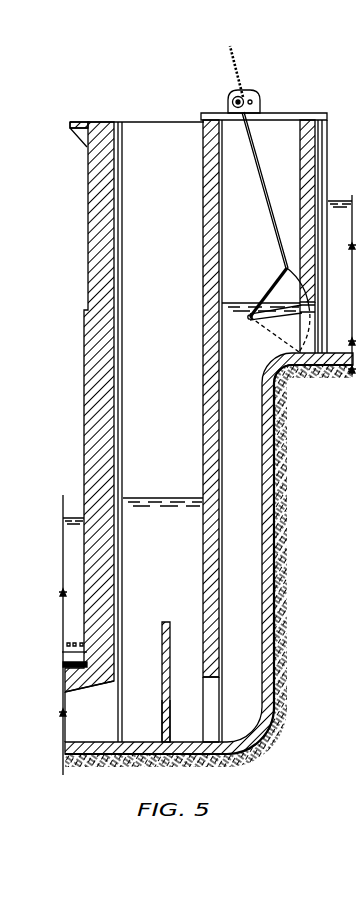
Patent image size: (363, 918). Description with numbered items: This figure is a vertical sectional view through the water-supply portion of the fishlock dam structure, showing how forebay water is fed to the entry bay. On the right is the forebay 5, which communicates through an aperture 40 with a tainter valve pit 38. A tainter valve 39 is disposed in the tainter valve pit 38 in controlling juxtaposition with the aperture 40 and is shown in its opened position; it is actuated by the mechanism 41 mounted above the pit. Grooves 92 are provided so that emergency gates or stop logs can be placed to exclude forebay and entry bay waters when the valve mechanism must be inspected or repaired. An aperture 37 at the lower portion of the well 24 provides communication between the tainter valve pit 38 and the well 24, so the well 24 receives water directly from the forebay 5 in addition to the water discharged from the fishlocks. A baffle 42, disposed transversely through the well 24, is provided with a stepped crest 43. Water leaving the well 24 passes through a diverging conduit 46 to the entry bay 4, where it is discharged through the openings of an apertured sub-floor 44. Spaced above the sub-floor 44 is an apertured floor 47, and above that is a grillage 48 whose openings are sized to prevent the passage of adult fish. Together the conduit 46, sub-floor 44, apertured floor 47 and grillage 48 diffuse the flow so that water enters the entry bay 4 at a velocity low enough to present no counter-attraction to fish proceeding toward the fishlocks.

The mechanism 41 is at (257, 93).
The grooves 92 is at (122, 300).
The well 24 is at (163, 350).
The tainter valve pit 38 is at (261, 252).
The tainter valve 39 is at (277, 283).
The forebay 5 is at (342, 285).
The aperture 40 is at (323, 346).
The entry bay 4 is at (71, 635).
The grillage 48 is at (78, 641).
The apertured floor 47 is at (68, 656).
The apertured sub-floor 44 is at (80, 684).
The conduit 46 is at (82, 717).
The stepped crest 43 is at (166, 622).
The baffle 42 is at (168, 668).
The aperture 37 is at (214, 722).